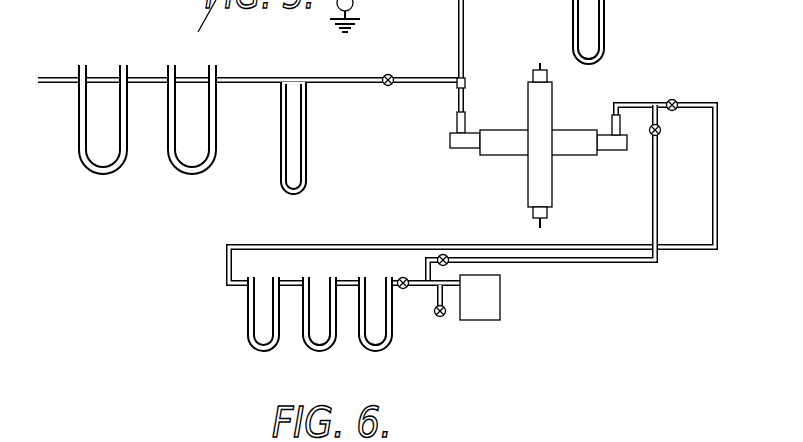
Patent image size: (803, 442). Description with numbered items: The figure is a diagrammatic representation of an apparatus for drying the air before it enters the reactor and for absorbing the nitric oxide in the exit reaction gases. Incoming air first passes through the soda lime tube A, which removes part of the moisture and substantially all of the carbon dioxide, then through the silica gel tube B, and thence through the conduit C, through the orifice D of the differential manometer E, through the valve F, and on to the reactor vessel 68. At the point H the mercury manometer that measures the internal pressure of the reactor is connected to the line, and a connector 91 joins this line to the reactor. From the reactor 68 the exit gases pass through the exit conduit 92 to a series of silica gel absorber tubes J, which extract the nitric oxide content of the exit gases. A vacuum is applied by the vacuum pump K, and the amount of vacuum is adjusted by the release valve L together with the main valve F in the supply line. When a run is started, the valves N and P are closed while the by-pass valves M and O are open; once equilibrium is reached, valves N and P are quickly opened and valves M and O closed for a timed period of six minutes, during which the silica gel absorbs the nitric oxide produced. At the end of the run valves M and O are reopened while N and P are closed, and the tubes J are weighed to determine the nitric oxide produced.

The soda lime tube A is at (78, 121).
The silica gel tube B is at (167, 121).
The conduit C is at (240, 78).
The orifice D is at (293, 78).
The differential manometer E is at (307, 148).
The valve F is at (388, 74).
The point H is at (466, 83).
The connector fitting 91 is at (455, 120).
The reactor vessel 68 is at (551, 128).
The exit conduit 92 is at (611, 122).
The valve N is at (678, 100).
The valve M is at (660, 126).
The valve O is at (445, 255).
The silica gel absorber tubes J is at (247, 312).
The valve P is at (403, 278).
The vacuum pump K is at (500, 300).
The release valve L is at (437, 318).